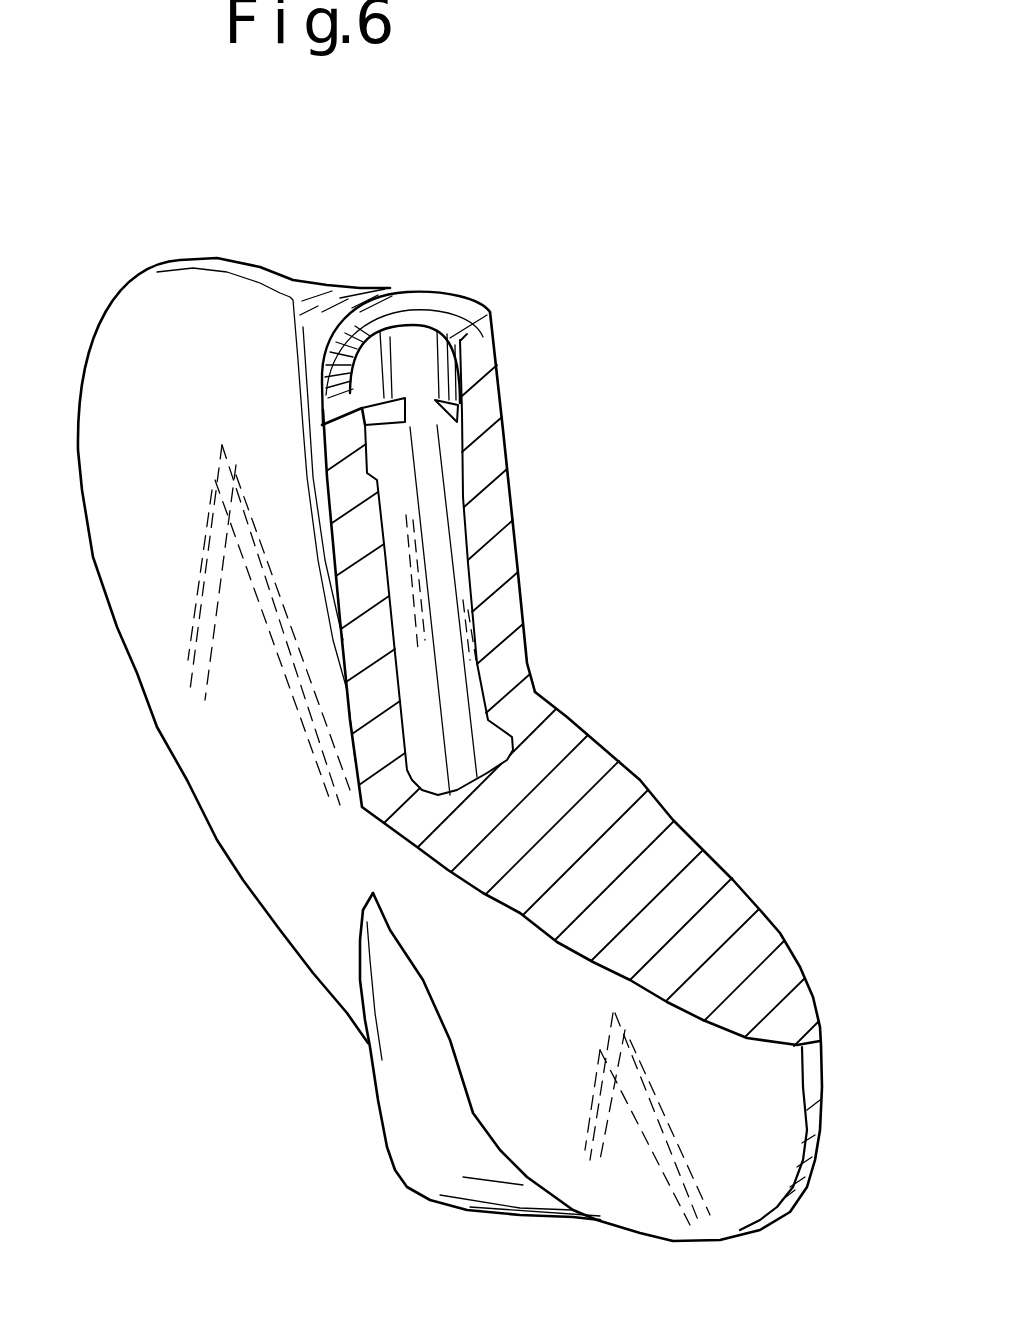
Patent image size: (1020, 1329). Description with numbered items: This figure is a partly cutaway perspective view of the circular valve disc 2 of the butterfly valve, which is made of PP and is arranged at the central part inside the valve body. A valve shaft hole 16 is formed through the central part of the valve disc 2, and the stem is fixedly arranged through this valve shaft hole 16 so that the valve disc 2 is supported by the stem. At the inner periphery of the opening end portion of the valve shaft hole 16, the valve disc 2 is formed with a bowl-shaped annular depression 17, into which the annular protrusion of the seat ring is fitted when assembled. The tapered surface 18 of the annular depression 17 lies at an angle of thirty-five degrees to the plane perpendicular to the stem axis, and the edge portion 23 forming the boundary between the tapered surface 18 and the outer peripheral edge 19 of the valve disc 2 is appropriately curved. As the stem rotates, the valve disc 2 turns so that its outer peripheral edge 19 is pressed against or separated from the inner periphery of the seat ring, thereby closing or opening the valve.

The valve disc 2 is at (223, 922).
The valve shaft hole 16 is at (428, 508).
The annular depression 17 is at (455, 331).
The tapered surface 18 is at (385, 315).
The outer peripheral edge 19 is at (216, 262).
The edge portion 23 is at (443, 303).